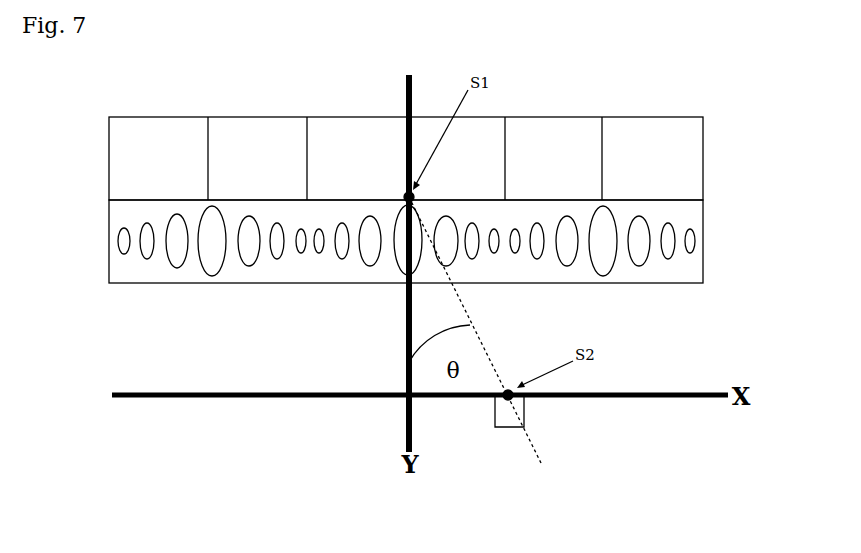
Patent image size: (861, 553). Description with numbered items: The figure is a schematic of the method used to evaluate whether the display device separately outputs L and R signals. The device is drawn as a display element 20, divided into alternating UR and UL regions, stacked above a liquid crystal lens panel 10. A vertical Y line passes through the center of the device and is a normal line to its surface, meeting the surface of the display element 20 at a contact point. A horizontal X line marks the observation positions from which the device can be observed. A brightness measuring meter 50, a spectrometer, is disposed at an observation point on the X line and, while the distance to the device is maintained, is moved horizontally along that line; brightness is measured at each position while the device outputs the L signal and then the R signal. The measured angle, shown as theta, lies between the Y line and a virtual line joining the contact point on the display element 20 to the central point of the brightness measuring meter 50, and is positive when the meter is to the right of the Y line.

The display element 20 is at (690, 154).
The liquid crystal lens panel 10 is at (688, 267).
The brightness measuring meter 50 is at (523, 407).